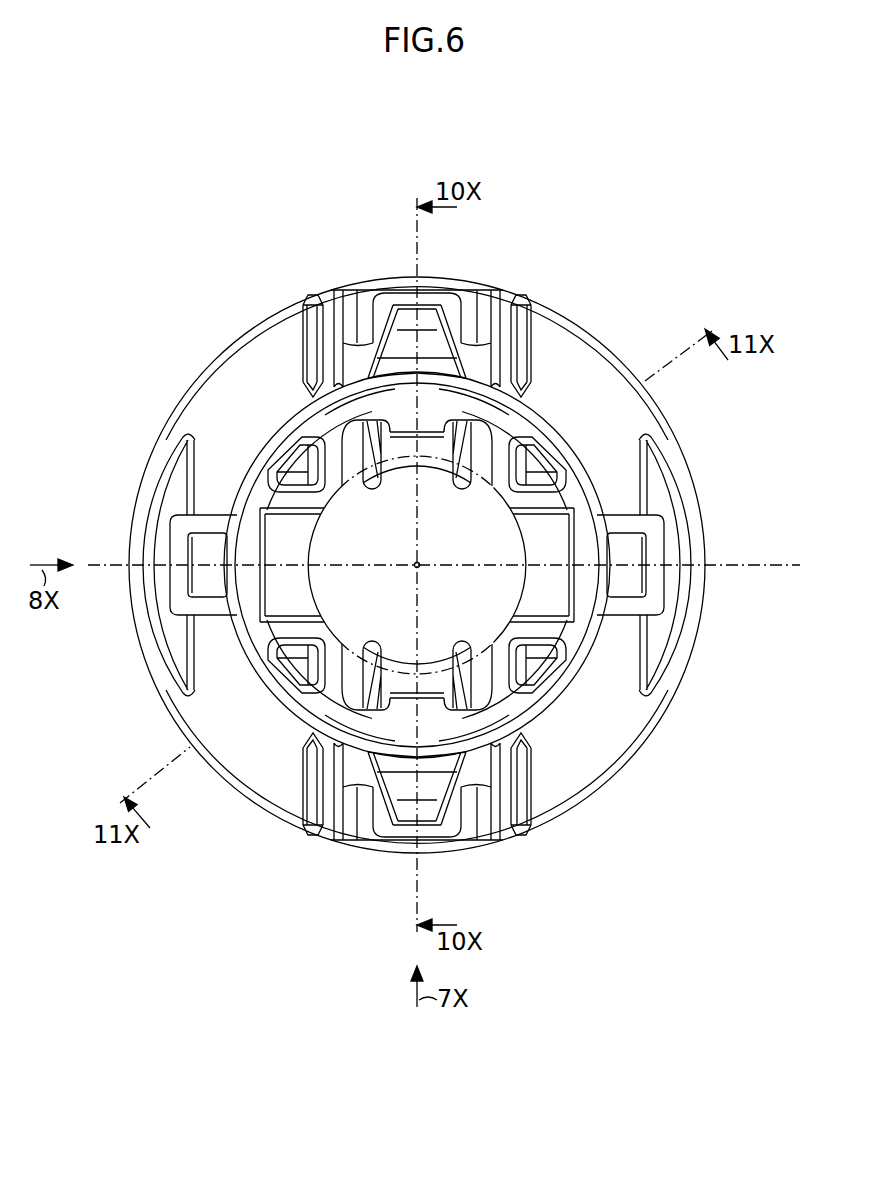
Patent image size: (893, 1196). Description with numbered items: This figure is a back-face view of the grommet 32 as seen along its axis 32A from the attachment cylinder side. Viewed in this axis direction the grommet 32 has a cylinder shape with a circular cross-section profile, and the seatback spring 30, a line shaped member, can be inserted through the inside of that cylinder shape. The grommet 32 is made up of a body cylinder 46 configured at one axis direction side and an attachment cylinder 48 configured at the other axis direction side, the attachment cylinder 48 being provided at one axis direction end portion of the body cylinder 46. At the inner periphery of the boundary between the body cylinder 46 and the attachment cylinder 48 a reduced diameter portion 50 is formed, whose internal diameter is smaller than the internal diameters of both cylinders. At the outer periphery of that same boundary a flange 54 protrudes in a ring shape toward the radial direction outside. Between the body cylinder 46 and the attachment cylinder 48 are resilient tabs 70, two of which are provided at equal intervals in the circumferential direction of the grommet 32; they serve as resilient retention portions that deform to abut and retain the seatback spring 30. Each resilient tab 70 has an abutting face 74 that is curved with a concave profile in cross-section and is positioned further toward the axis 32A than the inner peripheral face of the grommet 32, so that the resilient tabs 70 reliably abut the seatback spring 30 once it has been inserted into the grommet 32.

The seatback spring 30 is at (311, 588).
The grommet 32 is at (634, 279).
The axis 32A is at (421, 571).
The body cylinder 46 is at (653, 732).
The attachment cylinder 48 is at (567, 436).
The reduced diameter portion 50 is at (320, 512).
The flange 54 is at (656, 410).
The resilient tab 70 is at (476, 459).
The abutting face 74 is at (433, 468).